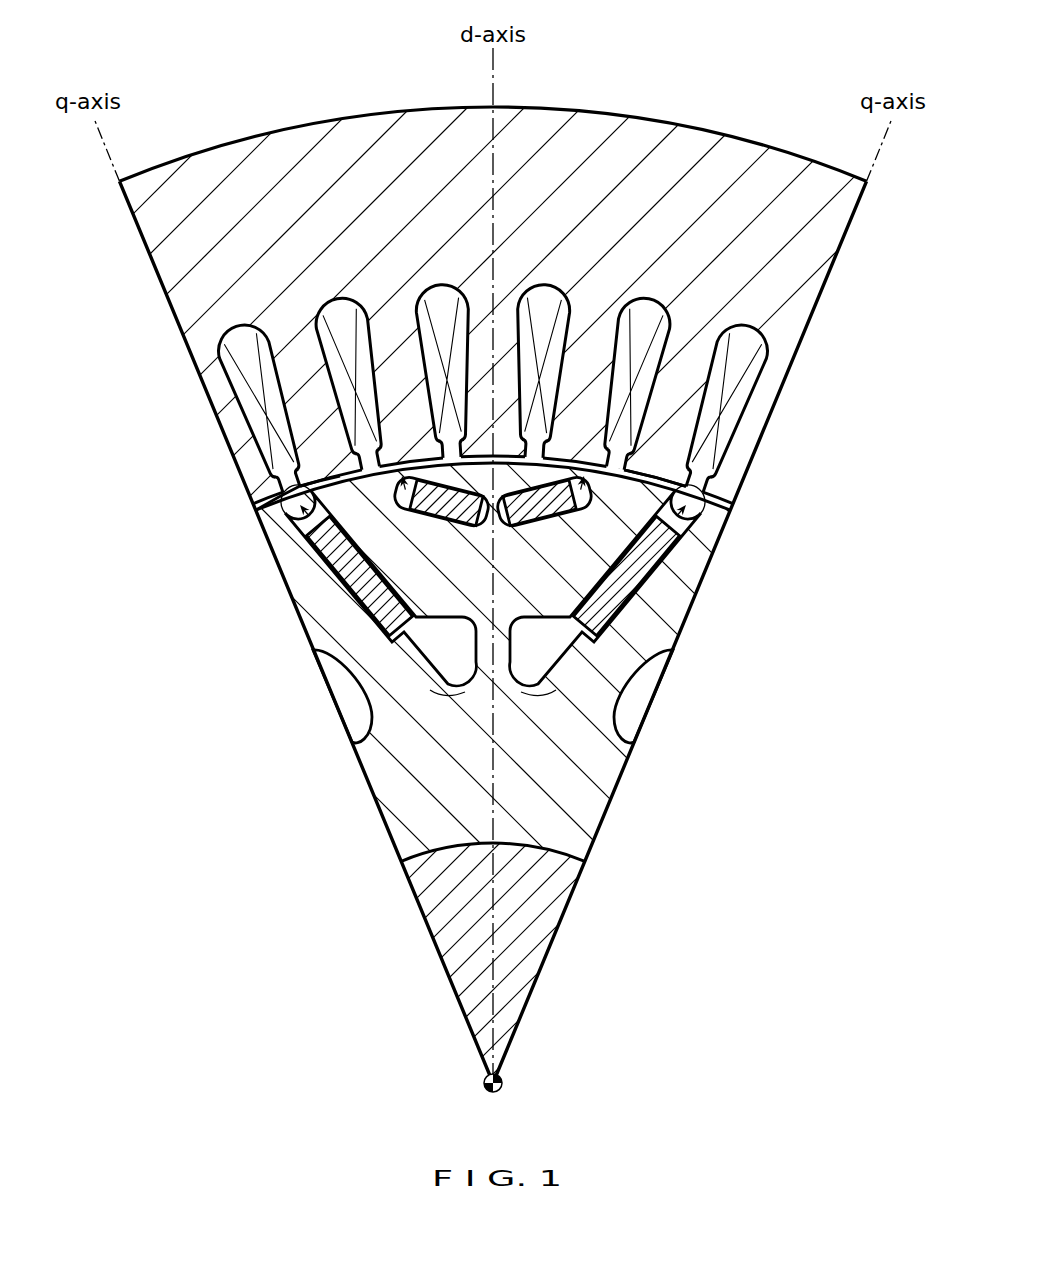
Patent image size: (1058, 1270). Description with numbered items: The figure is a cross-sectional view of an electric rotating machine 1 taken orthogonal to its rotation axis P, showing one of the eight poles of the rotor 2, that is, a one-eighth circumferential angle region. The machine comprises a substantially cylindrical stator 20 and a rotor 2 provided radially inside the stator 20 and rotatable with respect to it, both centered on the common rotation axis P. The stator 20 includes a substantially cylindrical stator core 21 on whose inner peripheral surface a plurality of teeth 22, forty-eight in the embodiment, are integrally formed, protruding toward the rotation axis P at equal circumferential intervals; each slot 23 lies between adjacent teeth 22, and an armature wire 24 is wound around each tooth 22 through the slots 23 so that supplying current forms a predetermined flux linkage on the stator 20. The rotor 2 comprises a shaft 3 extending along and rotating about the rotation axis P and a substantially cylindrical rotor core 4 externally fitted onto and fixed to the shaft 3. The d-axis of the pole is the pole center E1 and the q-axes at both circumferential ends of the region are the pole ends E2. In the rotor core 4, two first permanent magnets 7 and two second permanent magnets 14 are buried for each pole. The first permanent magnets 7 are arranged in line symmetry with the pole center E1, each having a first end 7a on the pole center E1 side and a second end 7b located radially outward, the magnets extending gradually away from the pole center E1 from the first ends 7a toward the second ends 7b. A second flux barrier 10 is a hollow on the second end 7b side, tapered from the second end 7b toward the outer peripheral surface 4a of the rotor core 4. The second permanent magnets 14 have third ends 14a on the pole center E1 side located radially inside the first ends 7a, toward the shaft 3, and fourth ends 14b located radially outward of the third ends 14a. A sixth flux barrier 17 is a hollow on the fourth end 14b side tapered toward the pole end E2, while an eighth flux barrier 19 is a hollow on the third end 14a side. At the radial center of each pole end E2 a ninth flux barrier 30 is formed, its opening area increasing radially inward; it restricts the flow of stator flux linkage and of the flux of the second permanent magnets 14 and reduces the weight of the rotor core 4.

The electric rotating machine 1 is at (832, 84).
The rotor 2 is at (760, 686).
The shaft 3 is at (553, 905).
The rotor core 4 is at (586, 804).
The outer peripheral surface of rotor core 4a is at (317, 468).
The first permanent magnet 7 is at (365, 575).
The first end 7a is at (493, 661).
The second end 7b is at (383, 447).
The second flux barrier 10 is at (353, 570).
The second permanent magnet 14 is at (345, 590).
The third end 14a is at (410, 637).
The fourth end 14b is at (292, 505).
The sixth flux barrier 17 is at (308, 540).
The eighth flux barrier 19 is at (467, 672).
The stator 20 is at (838, 344).
The stator core 21 is at (705, 150).
The teeth 22 is at (480, 400).
The slot 23 is at (700, 470).
The armature wire 24 is at (446, 284).
The ninth flux barrier 30 is at (340, 687).
The pole center E1 is at (497, 70).
The pole end E2 is at (110, 148).
The rotation axis P is at (503, 1082).